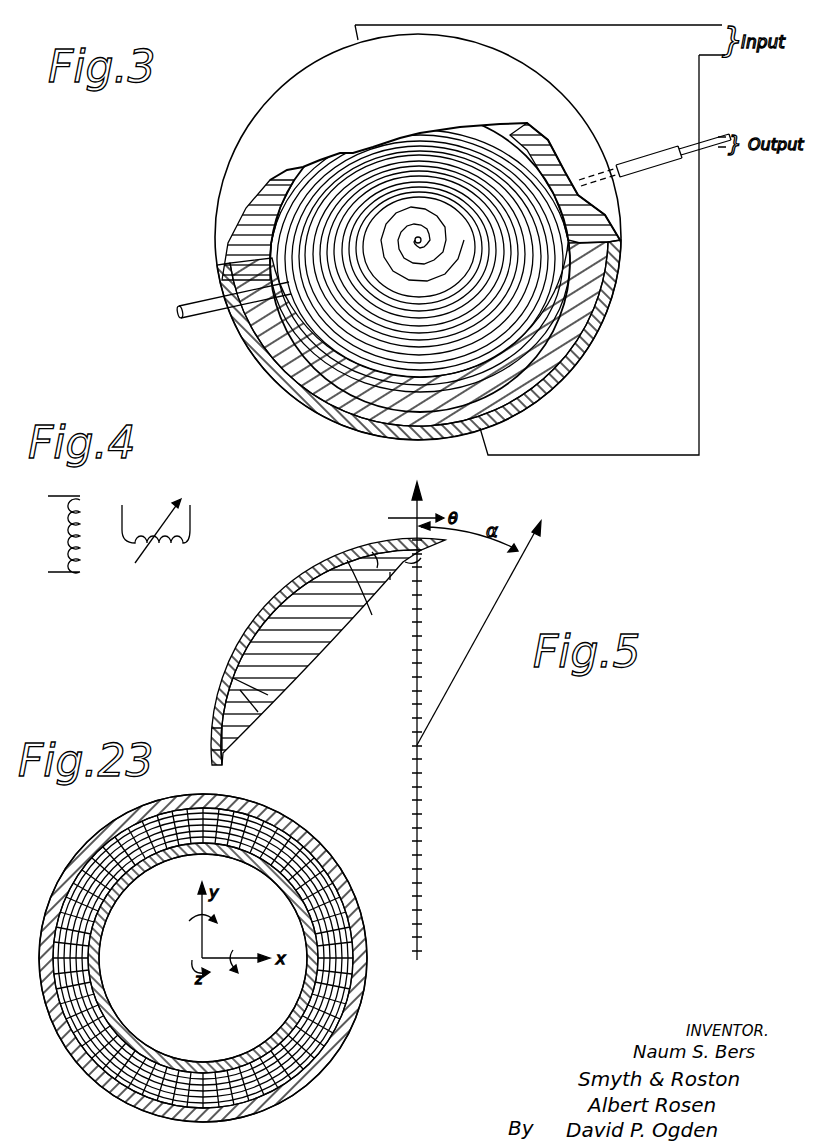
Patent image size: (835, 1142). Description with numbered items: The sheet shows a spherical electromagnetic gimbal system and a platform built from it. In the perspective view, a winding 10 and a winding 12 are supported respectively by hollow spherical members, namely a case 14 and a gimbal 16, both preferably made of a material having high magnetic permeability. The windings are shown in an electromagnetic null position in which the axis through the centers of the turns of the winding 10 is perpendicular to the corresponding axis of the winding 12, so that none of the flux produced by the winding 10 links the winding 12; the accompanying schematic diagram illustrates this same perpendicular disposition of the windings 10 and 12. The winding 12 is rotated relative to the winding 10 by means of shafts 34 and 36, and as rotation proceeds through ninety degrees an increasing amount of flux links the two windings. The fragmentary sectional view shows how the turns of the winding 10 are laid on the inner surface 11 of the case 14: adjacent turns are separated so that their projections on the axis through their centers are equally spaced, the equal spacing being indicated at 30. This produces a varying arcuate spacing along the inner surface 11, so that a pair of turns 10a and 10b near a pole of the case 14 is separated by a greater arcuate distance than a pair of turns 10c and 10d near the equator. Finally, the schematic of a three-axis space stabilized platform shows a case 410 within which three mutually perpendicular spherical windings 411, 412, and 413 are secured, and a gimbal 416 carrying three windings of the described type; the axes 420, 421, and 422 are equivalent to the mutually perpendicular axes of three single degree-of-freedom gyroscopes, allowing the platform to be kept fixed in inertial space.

In FIG. 3, the winding 10 is at (305, 377).
In FIG. 4, the winding 10 is at (84, 574).
In FIG. 3, the winding 12 is at (317, 308).
In FIG. 4, the winding 12 is at (180, 546).
In FIG. 3, the case 14 is at (355, 437).
In FIG. 5, the case 14 is at (235, 631).
In FIG. 3, the gimbal 16 is at (351, 384).
In FIG. 3, the shaft 34 is at (648, 166).
In FIG. 3, the shaft 36 is at (202, 319).
In FIG. 5, the inner surface 11 is at (377, 553).
In FIG. 5, the spacing 30 is at (417, 591).
In FIG. 5, the turn 10a is at (390, 580).
In FIG. 5, the turn 10b is at (394, 628).
In FIG. 5, the turn 10c is at (268, 695).
In FIG. 5, the turn 10d is at (258, 712).
In FIG. 23, the case 410 is at (68, 858).
In FIG. 23, the spherical winding 411 is at (218, 818).
In FIG. 23, the spherical winding 412 is at (253, 821).
In FIG. 23, the spherical winding 413 is at (274, 831).
In FIG. 23, the gimbal 416 is at (101, 980).
In FIG. 23, the axis 420 is at (190, 920).
In FIG. 23, the axis 421 is at (192, 961).
In FIG. 23, the axis 422 is at (234, 970).